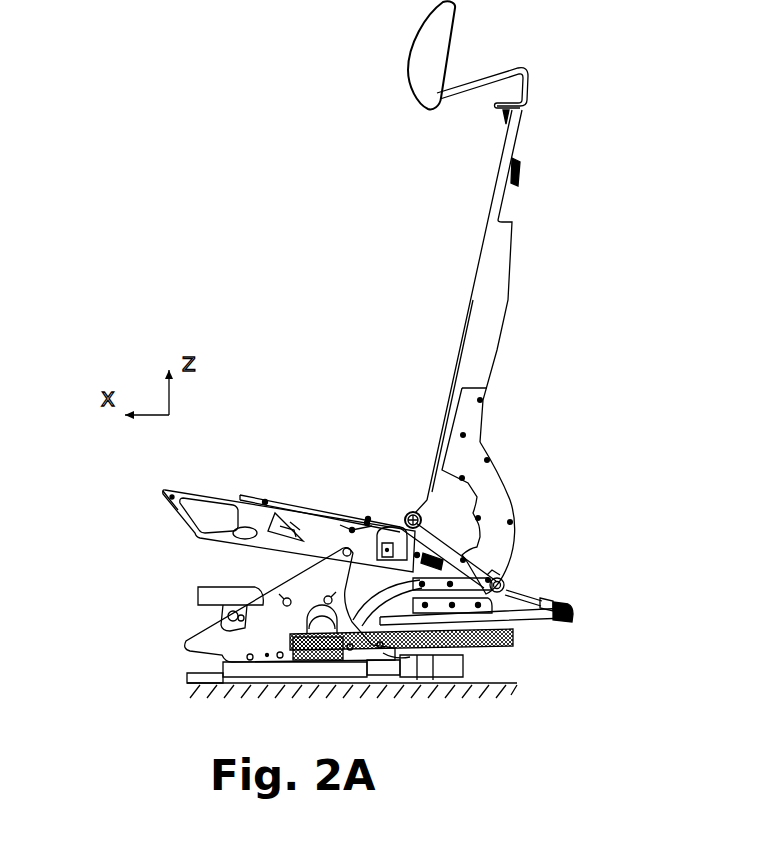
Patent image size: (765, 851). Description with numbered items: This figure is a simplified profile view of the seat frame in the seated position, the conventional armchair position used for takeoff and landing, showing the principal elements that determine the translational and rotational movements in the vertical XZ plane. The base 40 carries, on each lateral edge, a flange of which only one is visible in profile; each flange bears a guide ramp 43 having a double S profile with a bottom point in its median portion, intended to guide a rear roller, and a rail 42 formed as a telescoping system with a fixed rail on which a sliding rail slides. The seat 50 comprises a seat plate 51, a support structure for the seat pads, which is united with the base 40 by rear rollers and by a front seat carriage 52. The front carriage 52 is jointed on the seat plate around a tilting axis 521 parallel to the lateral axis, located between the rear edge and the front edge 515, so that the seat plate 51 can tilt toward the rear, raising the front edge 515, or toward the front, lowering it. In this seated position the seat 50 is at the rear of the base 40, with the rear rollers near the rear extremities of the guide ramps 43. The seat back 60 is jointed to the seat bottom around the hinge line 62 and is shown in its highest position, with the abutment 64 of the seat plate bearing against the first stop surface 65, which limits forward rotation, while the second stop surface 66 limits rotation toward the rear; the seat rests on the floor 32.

The floor 32 is at (274, 724).
The base 40 is at (361, 682).
The rail 42 is at (507, 649).
The guide ramp 43 is at (238, 584).
The seat 50 is at (146, 521).
The seat plate 51 is at (203, 490).
The front seat carriage 52 is at (274, 644).
The front edge 515 is at (163, 491).
The tilting axis 521 is at (329, 545).
The seat back 60 is at (507, 329).
The hinge line 62 is at (409, 510).
The abutment 64 is at (507, 577).
The first stop surface 65 is at (507, 594).
The second stop surface 66 is at (483, 443).